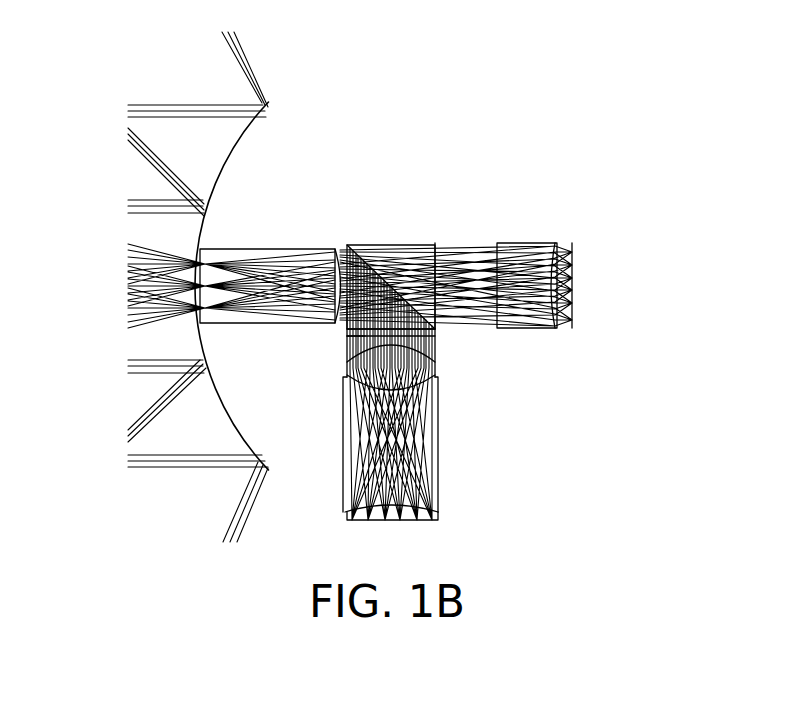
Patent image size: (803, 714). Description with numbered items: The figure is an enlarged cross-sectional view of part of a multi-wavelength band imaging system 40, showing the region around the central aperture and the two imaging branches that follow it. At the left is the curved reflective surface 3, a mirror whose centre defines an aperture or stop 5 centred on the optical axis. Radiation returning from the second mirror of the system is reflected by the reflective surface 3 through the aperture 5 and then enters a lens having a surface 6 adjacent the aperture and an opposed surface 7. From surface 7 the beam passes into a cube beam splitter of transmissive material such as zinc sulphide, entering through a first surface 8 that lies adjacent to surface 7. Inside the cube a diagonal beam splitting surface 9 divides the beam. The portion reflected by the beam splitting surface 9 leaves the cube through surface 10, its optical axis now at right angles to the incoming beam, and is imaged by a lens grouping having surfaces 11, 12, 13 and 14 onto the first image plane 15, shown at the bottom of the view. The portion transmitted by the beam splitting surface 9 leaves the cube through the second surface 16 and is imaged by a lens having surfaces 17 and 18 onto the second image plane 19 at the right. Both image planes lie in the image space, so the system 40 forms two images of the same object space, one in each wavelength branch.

The reflective surface 3 is at (242, 131).
The aperture or stop 5 is at (200, 246).
The lens surface 6 is at (205, 258).
The opposed lens surface 7 is at (336, 252).
The first surface of beam splitter 8 is at (345, 328).
The beam splitting surface 9 is at (350, 245).
The first exit surface of beam splitter 10 is at (362, 336).
The lens grouping surface 11 is at (437, 333).
The lens grouping surface 12 is at (437, 362).
The lens grouping surface 13 is at (423, 381).
The lens grouping surface 14 is at (425, 508).
The first image plane 15 is at (392, 522).
The second exit surface of beam splitter 16 is at (438, 242).
The lens surface 17 is at (496, 242).
The lens surface 18 is at (552, 251).
The second image plane 19 is at (573, 250).
The multi-wavelength band imaging system 40 is at (519, 145).